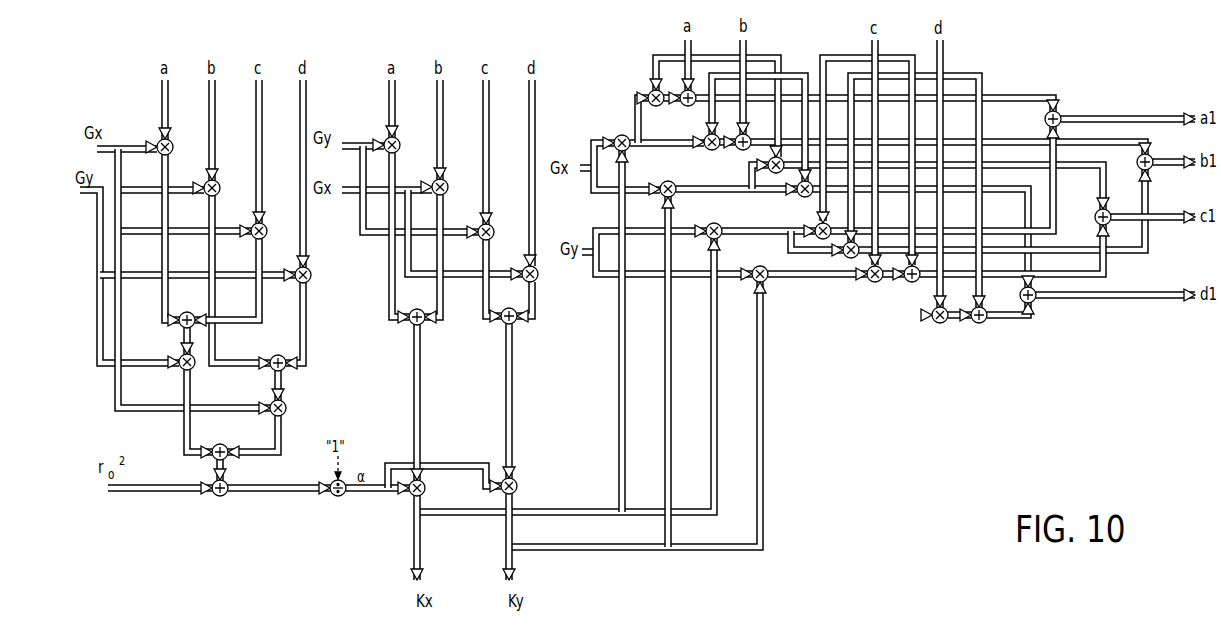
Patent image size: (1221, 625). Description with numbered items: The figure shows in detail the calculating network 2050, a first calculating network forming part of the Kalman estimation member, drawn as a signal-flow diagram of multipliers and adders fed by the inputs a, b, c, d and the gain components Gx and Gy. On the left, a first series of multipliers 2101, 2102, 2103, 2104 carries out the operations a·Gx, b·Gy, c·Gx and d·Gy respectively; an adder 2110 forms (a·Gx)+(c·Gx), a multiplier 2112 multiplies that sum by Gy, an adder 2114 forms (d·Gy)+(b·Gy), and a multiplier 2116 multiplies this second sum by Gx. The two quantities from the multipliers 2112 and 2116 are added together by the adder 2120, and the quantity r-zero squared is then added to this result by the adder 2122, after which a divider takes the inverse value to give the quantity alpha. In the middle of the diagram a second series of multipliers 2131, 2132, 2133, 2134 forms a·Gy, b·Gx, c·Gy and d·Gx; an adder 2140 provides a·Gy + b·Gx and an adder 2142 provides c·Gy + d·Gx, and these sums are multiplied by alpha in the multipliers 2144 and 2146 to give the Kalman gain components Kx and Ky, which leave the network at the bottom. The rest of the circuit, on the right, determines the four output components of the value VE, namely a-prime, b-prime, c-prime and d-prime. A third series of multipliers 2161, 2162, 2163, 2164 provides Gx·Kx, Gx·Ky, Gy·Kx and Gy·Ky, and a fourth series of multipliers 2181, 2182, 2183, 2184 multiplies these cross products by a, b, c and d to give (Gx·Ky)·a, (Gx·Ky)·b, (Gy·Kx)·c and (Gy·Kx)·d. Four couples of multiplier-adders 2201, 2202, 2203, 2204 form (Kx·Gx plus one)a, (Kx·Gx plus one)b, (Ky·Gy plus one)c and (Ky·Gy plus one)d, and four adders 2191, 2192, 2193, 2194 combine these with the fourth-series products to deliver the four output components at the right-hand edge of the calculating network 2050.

The multiplier 2101 is at (174, 142).
The multiplier 2102 is at (220, 183).
The multiplier 2103 is at (266, 225).
The multiplier 2104 is at (311, 277).
The adder 2110 is at (180, 326).
The multiplier 2112 is at (196, 367).
The adder 2114 is at (288, 368).
The multiplier 2116 is at (288, 412).
The adder 2120 is at (214, 445).
The adder 2122 is at (226, 497).
The multiplier 2131 is at (397, 140).
The multiplier 2132 is at (445, 182).
The multiplier 2133 is at (491, 226).
The multiplier 2134 is at (538, 277).
The adder 2140 is at (422, 326).
The adder 2142 is at (516, 325).
The multiplier 2144 is at (411, 496).
The multiplier 2146 is at (518, 486).
The multiplier 2161 is at (619, 134).
The multiplier 2162 is at (663, 182).
The multiplier 2163 is at (710, 225).
The multiplier 2164 is at (756, 268).
The multiplier 2181 is at (780, 156).
The multiplier 2182 is at (801, 196).
The multiplier 2183 is at (815, 227).
The multiplier 2184 is at (845, 256).
The adder 2191 is at (1060, 111).
The adder 2192 is at (1151, 170).
The adder 2193 is at (1096, 213).
The adder 2194 is at (1037, 303).
The multiplier-adder couple 2201 is at (697, 109).
The multiplier-adder couple 2202 is at (752, 153).
The multiplier-adder couple 2203 is at (921, 285).
The multiplier-adder couple 2204 is at (988, 327).
The calculating network 2050 is at (905, 448).